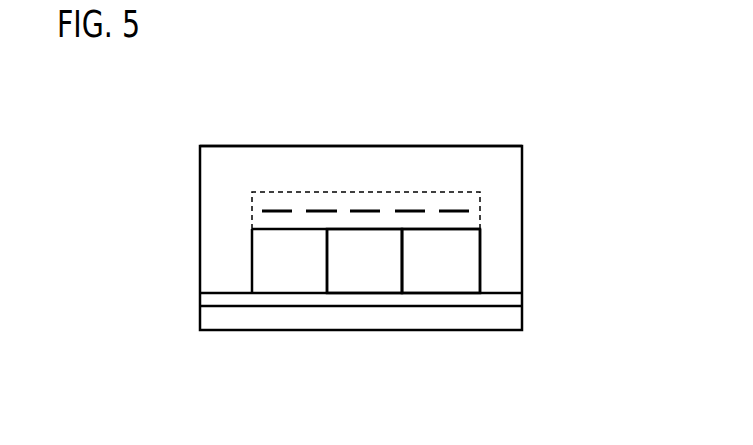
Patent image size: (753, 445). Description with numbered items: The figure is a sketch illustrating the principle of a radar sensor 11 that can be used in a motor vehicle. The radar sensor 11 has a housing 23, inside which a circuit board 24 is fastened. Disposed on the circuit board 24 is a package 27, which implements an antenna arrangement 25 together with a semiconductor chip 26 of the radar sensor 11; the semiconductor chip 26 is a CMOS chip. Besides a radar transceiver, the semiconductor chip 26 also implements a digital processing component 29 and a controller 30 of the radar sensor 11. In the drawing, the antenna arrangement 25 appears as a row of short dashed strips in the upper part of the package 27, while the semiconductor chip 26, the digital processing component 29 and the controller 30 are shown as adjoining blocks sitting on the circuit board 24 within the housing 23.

The radar sensor 11 is at (568, 129).
The housing 23 is at (425, 146).
The circuit board 24 is at (502, 299).
The antenna arrangement 25 is at (282, 210).
The semiconductor chip 26 is at (252, 260).
The package 27 is at (503, 232).
The digital processing component 29 is at (367, 284).
The controller 30 is at (441, 282).